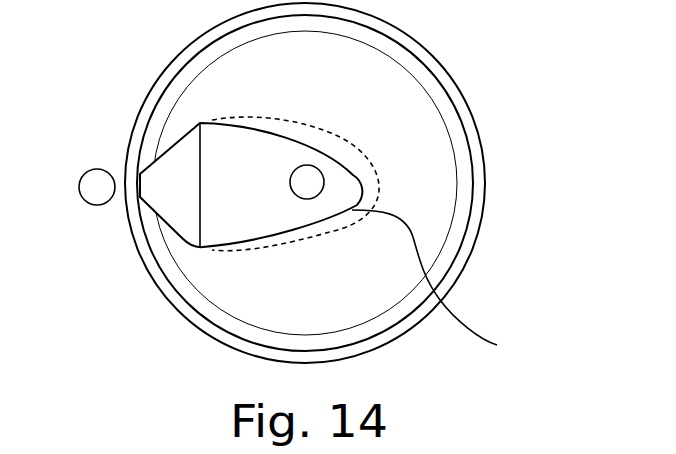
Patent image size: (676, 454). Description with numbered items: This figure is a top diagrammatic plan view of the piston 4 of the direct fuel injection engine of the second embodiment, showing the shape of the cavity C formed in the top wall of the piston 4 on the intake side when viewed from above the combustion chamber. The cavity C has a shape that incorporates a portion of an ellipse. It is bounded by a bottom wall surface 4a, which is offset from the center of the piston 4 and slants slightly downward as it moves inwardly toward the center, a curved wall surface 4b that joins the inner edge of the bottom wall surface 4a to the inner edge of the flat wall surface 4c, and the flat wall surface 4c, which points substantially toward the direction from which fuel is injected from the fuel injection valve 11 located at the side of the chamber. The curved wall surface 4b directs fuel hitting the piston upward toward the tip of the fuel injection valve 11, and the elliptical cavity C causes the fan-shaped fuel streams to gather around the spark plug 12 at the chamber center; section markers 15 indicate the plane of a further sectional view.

The piston 4 is at (130, 134).
The bottom wall surface 4a is at (243, 197).
The curved wall surface 4b is at (288, 238).
The flat wall surface 4c is at (441, 289).
The cavity C is at (283, 119).
The section line 15- 15 is at (327, 184).
The fuel injection valve 11 is at (97, 187).
The spark plug 12 is at (307, 182).